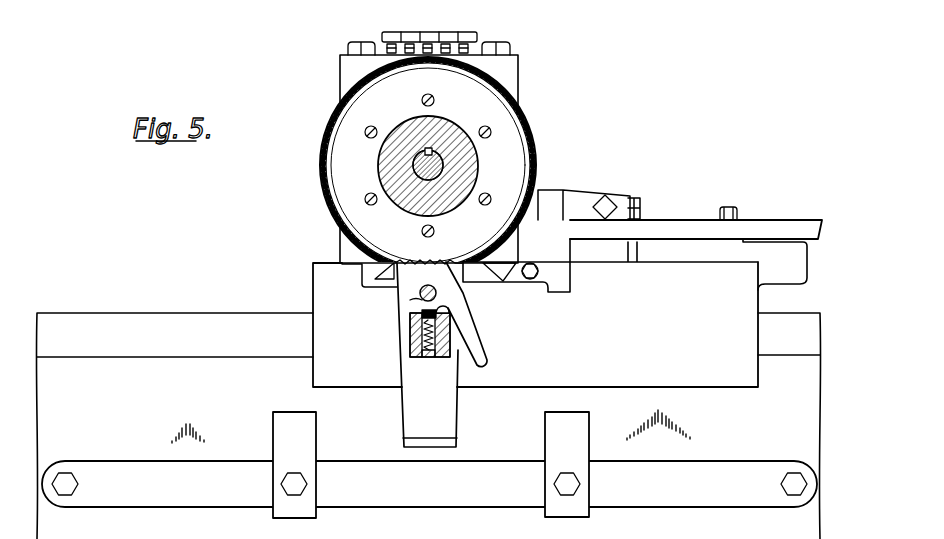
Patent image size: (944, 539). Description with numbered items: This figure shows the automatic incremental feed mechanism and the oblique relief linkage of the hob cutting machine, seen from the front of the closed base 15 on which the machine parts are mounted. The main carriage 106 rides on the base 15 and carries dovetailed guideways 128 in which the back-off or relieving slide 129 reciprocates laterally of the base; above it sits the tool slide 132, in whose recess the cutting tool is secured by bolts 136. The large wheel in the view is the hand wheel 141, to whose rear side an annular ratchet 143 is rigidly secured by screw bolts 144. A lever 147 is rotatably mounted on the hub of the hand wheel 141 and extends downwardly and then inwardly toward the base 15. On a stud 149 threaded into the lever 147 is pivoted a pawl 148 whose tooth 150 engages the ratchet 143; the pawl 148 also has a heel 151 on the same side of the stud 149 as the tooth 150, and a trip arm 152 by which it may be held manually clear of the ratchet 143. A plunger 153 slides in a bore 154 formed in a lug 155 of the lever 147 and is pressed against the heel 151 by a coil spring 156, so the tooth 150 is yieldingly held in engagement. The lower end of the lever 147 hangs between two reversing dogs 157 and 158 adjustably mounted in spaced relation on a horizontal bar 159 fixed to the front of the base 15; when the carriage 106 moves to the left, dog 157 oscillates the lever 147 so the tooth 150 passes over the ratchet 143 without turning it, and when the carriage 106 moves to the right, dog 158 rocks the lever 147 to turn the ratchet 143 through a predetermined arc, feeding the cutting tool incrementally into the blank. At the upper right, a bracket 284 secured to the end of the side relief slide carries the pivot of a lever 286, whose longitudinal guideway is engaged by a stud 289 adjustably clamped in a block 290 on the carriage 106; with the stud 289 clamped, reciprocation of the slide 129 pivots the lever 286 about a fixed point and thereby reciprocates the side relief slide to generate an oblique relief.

The closed base 15 is at (156, 378).
The main carriage 106 is at (714, 373).
The dovetailed guideways 128 is at (491, 267).
The back-off or relieving slide 129 is at (478, 275).
The tool slide 132 is at (507, 72).
The bolts 136 is at (467, 33).
The hand wheel 141 is at (466, 177).
The ratchet 143 is at (513, 165).
The screw bolts 144 is at (491, 133).
The lever 147 is at (401, 351).
The pawl 148 is at (426, 284).
The stud 149 is at (418, 296).
The tooth 150 is at (417, 264).
The heel 151 is at (418, 312).
The trip arm 152 is at (488, 364).
The plunger 153 is at (441, 311).
The bore 154 is at (444, 360).
The lug 155 is at (414, 359).
The coil spring 156 is at (423, 338).
The reversing dog 157 is at (284, 430).
The reversing dog 158 is at (557, 430).
The horizontal bar 159 is at (231, 496).
The bracket 284 is at (617, 202).
The lever 286 is at (663, 229).
The stud 289 is at (738, 209).
The block 290 is at (776, 277).